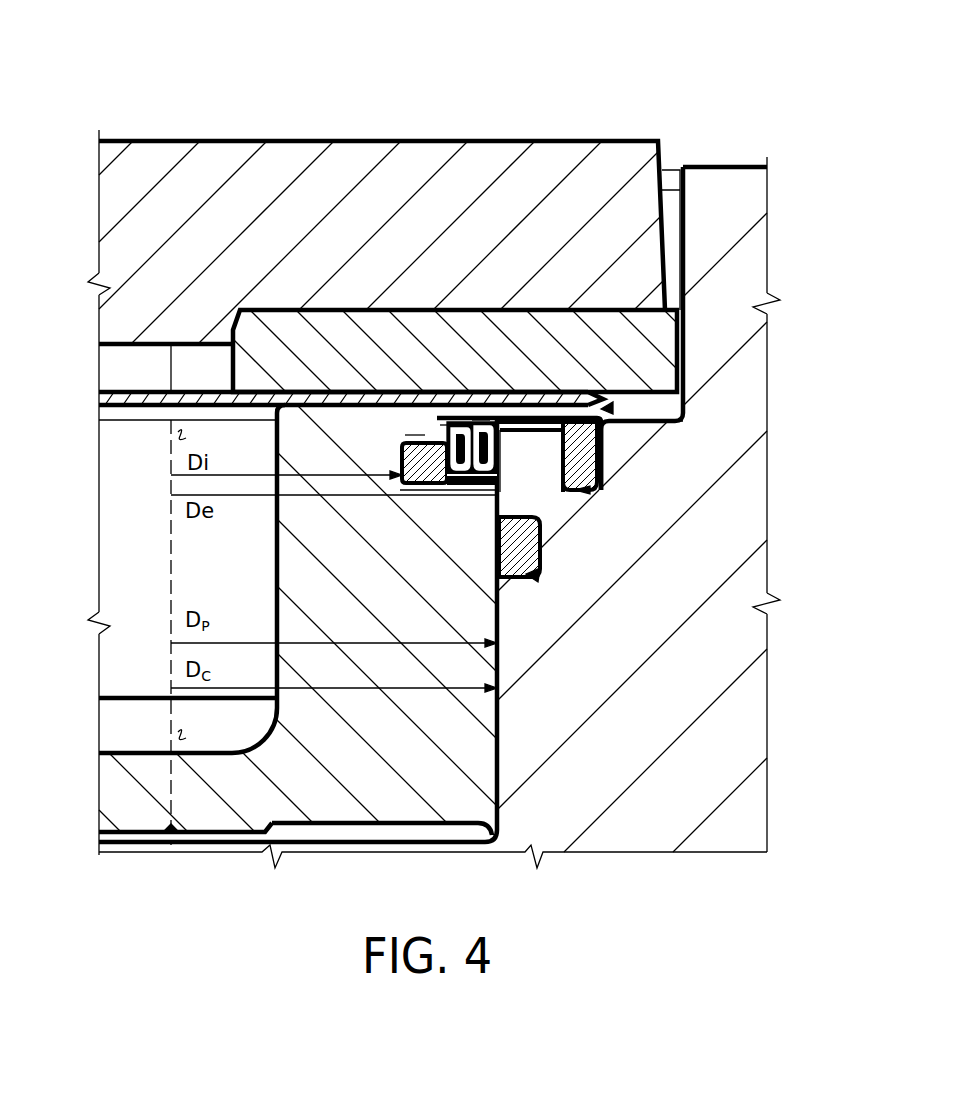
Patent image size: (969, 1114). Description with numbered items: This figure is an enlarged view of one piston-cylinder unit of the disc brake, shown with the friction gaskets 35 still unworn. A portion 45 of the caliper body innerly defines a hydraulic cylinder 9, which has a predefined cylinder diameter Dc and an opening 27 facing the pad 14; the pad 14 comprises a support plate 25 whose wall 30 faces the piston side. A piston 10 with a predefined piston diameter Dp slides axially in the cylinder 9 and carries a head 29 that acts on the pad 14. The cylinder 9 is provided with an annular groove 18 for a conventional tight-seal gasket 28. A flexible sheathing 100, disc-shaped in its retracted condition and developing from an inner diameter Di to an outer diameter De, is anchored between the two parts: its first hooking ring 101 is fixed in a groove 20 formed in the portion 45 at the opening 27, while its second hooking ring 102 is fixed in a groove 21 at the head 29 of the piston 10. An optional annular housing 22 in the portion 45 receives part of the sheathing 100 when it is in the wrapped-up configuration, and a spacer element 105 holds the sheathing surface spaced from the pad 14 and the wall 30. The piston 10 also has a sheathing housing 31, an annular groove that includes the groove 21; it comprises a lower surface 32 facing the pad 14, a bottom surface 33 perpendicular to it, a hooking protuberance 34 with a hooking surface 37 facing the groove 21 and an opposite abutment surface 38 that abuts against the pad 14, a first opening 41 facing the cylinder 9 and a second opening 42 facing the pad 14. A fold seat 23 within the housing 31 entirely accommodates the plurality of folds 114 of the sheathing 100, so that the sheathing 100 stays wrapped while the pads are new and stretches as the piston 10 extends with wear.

The hydraulic cylinder 9 is at (497, 790).
The piston 10 is at (330, 800).
The pad 14 is at (667, 121).
The annular groove 18 is at (542, 542).
The groove 20 is at (593, 495).
The groove 21 is at (400, 465).
The annular housing 22 is at (522, 430).
The fold seat 23 is at (448, 488).
The support plate 25 is at (687, 320).
The opening 27 is at (660, 425).
The tight-seal gasket 28 is at (521, 580).
The head 29 is at (143, 450).
The wall 30 is at (125, 410).
The sheathing housing 31 is at (448, 540).
The lower surface 32 is at (440, 472).
The bottom surface 33 is at (405, 483).
The hooking protuberance 34 is at (365, 388).
The friction gasket 35 is at (557, 140).
The hooking surface 37 is at (435, 433).
The abutment surface 38 is at (413, 430).
The first opening 41 is at (527, 492).
The second opening 42 is at (510, 387).
The portion 45 is at (582, 794).
The flexible sheathing 100 is at (612, 407).
The first hooking ring 101 is at (597, 485).
The second hooking ring 102 is at (402, 490).
The spacer element 105 is at (480, 420).
The folds 114 is at (445, 425).